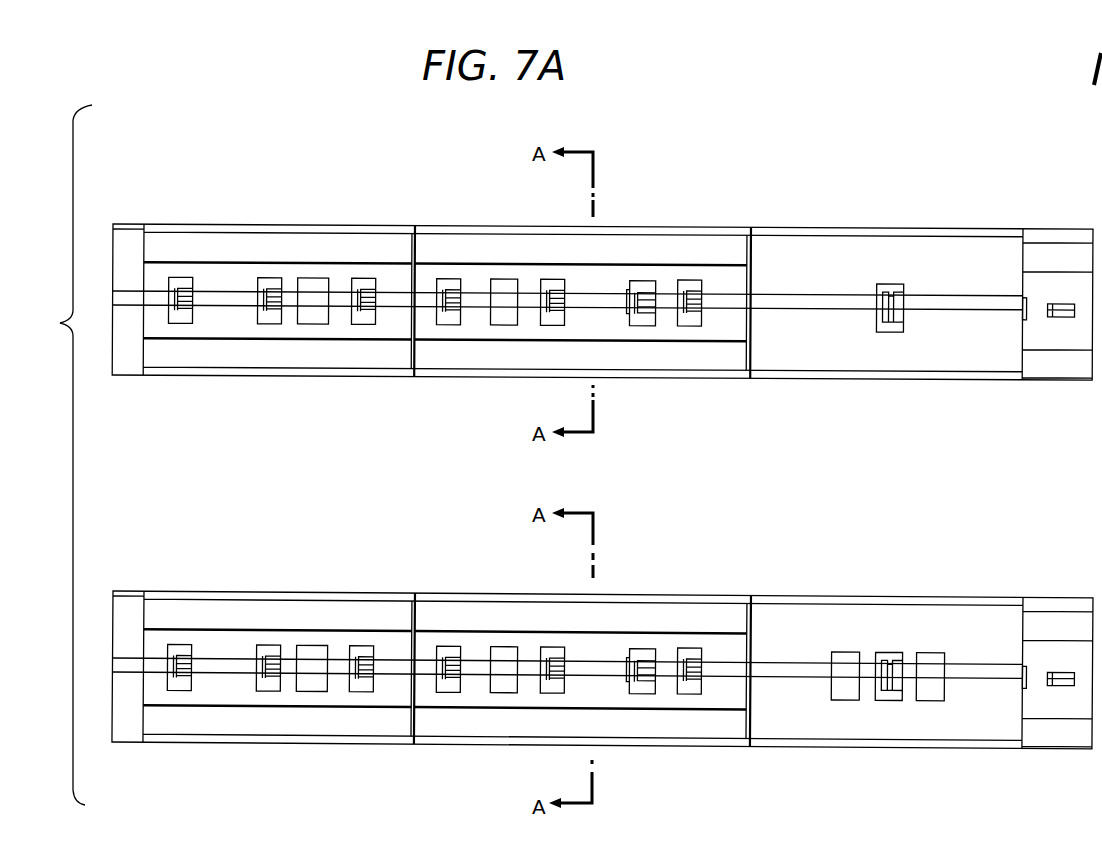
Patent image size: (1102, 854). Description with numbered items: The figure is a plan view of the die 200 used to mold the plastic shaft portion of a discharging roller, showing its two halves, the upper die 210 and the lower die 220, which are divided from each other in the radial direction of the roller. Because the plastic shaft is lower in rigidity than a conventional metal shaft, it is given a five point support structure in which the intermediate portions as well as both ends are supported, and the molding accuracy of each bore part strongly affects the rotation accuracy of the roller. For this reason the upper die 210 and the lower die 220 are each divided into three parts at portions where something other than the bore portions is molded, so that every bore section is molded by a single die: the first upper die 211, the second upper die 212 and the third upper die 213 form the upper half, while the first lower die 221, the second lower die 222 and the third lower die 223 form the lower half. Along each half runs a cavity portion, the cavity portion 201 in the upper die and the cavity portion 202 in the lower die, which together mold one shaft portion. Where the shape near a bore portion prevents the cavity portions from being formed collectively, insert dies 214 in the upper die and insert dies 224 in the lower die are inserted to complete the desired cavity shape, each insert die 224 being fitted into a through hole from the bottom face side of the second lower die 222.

The die 200 is at (927, 126).
The upper die 210 is at (786, 199).
The lower die 220 is at (740, 580).
The first upper die 211 is at (300, 238).
The second upper die 212 is at (482, 238).
The third upper die 213 is at (931, 247).
The insert die 214 is at (647, 283).
The cavity portion 201 is at (727, 300).
The first lower die 221 is at (275, 607).
The second lower die 222 is at (450, 608).
The third lower die 223 is at (937, 610).
The insert die 224 is at (645, 650).
The cavity portion 202 is at (782, 667).